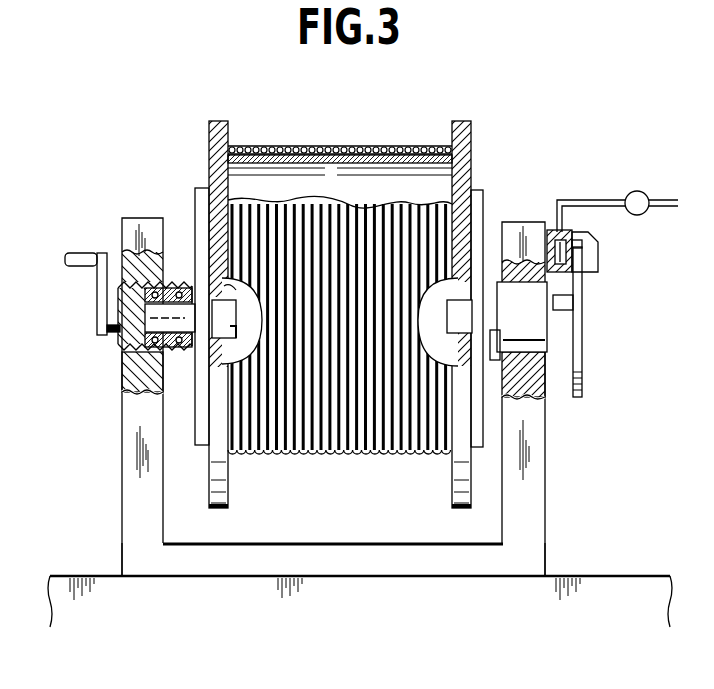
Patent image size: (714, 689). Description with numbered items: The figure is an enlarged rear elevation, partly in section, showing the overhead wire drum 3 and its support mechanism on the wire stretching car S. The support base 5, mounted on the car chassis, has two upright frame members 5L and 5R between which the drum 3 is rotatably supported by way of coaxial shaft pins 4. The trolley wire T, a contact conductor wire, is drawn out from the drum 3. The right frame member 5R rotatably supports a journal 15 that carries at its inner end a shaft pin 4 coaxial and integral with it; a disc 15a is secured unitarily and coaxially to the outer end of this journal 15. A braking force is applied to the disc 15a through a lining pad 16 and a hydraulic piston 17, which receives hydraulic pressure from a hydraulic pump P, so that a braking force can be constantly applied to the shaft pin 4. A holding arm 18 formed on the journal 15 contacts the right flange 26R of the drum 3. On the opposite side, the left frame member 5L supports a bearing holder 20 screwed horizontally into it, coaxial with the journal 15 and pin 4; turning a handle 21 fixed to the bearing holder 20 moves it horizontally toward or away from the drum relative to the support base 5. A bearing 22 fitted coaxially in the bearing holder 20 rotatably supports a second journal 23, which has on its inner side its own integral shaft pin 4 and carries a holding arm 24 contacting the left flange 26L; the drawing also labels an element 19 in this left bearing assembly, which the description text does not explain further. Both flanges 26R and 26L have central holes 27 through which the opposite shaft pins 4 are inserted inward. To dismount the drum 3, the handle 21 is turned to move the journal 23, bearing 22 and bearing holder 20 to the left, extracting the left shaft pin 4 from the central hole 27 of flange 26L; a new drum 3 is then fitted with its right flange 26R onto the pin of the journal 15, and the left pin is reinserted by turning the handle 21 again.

The overhead wire drum 3 is at (472, 173).
The shaft pin 4 is at (217, 325).
The support base 5 is at (386, 563).
The upright frame member 5L is at (128, 470).
The upright frame member 5R is at (527, 468).
The journal 15 is at (541, 341).
The disc 15a is at (583, 322).
The lining pad 16 is at (578, 253).
The hydraulic piston 17 is at (565, 237).
The holding arm 18 is at (483, 212).
The bearing 19 is at (173, 284).
The bearing holder 20 is at (125, 337).
The handle 21 is at (66, 258).
The bearing 22 is at (160, 364).
The journal 23 is at (146, 315).
The holding arm 24 is at (195, 190).
The flange 26L is at (215, 148).
The flange 26R is at (457, 490).
The central hole 27 is at (230, 290).
The trolley wire T is at (347, 145).
The wire stretching car S is at (607, 572).
The hydraulic pump P is at (617, 211).